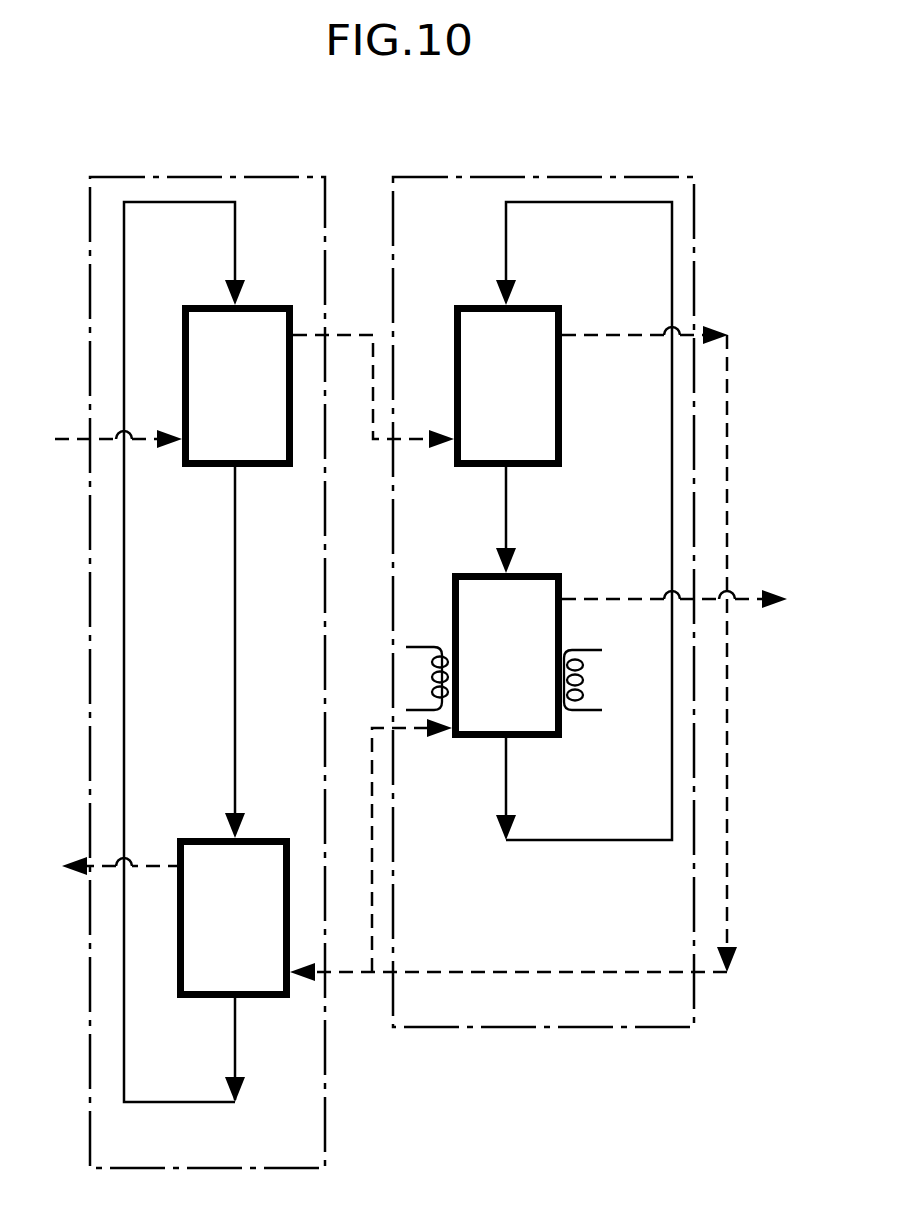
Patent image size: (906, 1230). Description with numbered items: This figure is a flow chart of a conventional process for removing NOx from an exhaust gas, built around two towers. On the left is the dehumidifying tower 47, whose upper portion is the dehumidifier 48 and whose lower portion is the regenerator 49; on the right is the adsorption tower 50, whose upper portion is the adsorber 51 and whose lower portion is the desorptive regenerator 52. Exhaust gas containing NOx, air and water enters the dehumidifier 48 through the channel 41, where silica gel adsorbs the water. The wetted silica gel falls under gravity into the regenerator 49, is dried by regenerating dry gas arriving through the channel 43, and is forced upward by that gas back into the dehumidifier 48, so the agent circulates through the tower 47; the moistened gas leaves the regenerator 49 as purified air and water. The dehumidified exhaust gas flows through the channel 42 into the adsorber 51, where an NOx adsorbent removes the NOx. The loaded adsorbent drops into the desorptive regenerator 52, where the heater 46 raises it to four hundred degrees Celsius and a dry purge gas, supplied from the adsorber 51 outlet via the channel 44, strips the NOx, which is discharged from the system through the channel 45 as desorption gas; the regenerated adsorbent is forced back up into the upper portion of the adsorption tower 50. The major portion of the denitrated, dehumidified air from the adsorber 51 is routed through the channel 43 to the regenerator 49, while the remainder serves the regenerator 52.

The channel 41 is at (80, 438).
The channel 42 is at (415, 433).
The channel 43 is at (727, 728).
The channel 44 is at (370, 740).
The channel 45 is at (610, 600).
The heater 46 is at (588, 711).
The dehumidifying tower 47 is at (300, 177).
The dehumidifier 48 is at (262, 303).
The regenerator 49 is at (208, 837).
The adsorption tower 50 is at (620, 176).
The adsorber 51 is at (562, 402).
The desorptive regenerator 52 is at (530, 572).